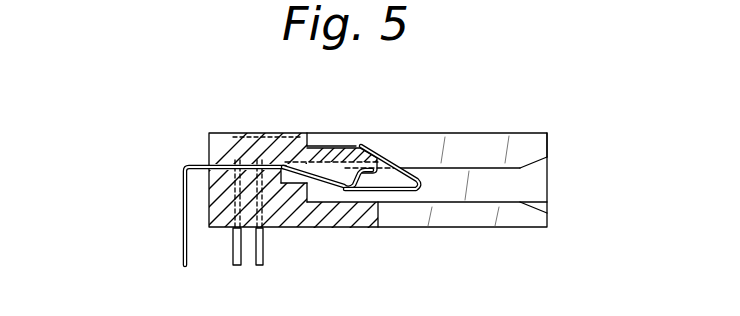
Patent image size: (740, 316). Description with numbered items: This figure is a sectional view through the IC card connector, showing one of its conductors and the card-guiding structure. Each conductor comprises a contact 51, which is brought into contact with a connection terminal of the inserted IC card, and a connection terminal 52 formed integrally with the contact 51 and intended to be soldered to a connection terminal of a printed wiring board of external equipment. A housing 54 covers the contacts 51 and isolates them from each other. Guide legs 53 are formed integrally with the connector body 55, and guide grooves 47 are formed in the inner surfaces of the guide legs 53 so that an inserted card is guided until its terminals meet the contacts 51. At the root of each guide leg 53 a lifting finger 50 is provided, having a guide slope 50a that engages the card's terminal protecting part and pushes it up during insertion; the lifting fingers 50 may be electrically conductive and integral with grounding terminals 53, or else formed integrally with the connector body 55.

The guide groove 47 is at (535, 182).
The lifting finger 50 is at (396, 182).
The guide slope 50a is at (400, 166).
The contact 51 is at (330, 185).
The connection terminal 52 is at (183, 200).
The guide leg / grounding terminal 53 is at (547, 145).
The housing 54 is at (347, 148).
The connector body 55 is at (223, 133).